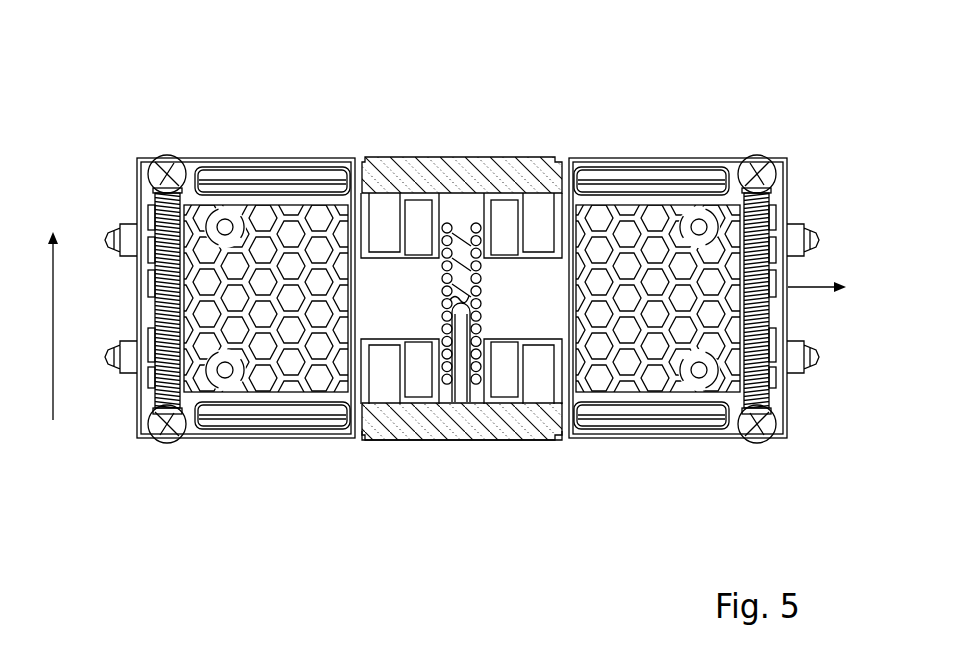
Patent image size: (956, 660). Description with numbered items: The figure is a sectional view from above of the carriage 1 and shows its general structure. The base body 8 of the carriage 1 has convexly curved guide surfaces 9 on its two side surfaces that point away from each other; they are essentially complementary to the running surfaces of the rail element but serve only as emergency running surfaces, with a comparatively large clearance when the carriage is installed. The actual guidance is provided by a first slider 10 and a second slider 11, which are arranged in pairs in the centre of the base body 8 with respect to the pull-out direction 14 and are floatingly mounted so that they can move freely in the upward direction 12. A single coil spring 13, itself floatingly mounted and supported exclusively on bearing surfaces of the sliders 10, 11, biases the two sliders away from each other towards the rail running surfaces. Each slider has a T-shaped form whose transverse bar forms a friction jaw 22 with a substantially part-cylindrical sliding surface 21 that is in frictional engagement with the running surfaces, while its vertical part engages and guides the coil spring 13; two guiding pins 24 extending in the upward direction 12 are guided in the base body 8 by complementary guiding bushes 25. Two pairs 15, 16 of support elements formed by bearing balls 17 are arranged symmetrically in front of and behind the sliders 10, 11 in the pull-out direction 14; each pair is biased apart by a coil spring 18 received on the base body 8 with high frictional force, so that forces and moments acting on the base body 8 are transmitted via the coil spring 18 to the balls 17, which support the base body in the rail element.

The carriage 1 is at (132, 105).
The base body 8 is at (613, 188).
The guide surfaces 9 is at (237, 152).
The first slider 10 is at (438, 180).
The second slider 11 is at (455, 423).
The upward direction 12 is at (48, 310).
The coil spring 13 is at (481, 262).
The pull-out direction 14 is at (813, 287).
The first pair of support elements 15 is at (184, 101).
The second pair of support elements 16 is at (768, 93).
The bearing balls 17 is at (149, 172).
The coil spring 18 is at (140, 390).
The sliding surface 21 is at (434, 183).
The friction jaw 22 is at (503, 428).
The guiding pins 24 is at (380, 230).
The guiding bushes 25 is at (345, 237).